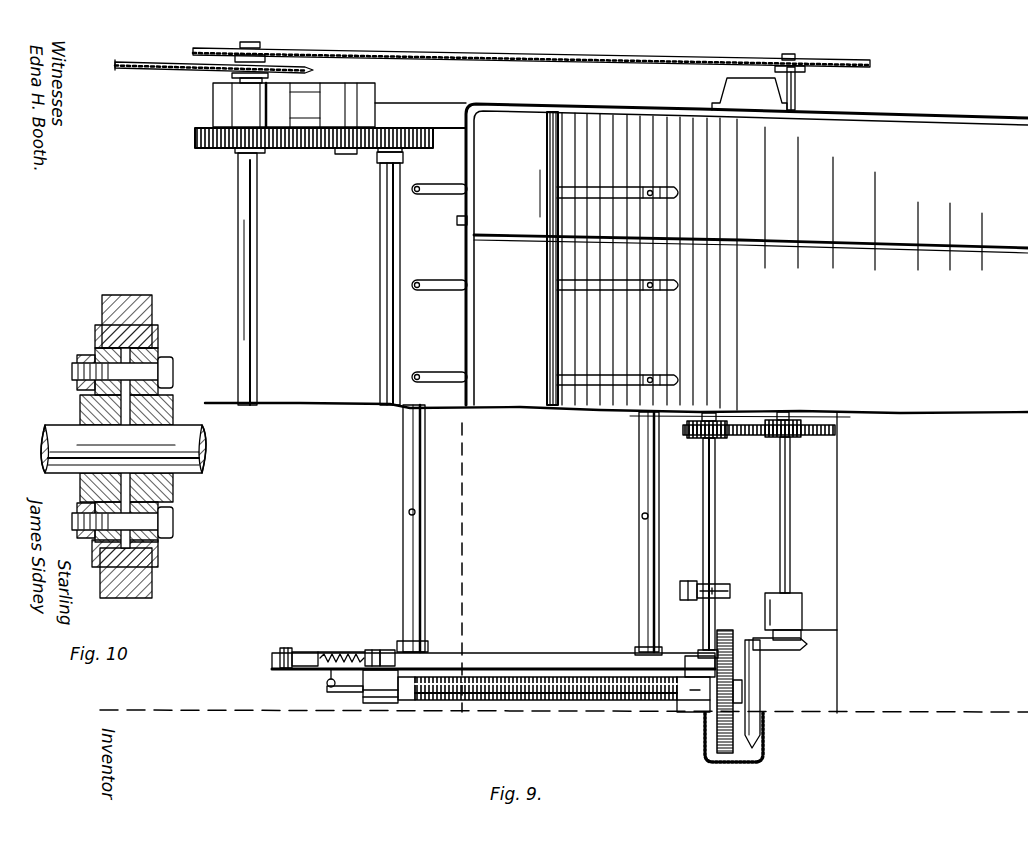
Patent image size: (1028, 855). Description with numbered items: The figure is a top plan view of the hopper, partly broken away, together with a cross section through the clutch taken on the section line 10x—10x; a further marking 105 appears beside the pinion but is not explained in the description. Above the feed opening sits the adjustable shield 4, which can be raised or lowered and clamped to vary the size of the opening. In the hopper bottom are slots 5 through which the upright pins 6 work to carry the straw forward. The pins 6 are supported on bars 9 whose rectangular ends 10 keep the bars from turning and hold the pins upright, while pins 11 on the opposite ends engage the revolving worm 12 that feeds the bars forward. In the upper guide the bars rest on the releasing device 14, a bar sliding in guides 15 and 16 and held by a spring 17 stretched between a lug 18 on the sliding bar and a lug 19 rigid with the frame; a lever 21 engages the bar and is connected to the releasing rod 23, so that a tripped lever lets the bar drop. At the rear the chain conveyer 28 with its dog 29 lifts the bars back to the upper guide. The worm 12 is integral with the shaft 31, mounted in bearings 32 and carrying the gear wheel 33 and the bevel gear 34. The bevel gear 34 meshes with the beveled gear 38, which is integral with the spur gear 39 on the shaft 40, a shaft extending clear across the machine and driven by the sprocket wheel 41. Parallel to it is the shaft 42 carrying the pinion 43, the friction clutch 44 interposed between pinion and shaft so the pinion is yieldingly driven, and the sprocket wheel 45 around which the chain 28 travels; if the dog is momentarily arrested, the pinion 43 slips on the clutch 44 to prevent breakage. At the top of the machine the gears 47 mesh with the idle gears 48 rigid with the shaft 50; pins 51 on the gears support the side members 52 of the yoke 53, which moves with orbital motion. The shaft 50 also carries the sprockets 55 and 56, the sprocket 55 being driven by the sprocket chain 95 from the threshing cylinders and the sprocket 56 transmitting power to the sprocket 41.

In FIG. 9, the adjustable shield 4 is at (518, 400).
In FIG. 9, the slots 5 is at (680, 193).
In FIG. 9, the upright pins 6 is at (417, 193).
In FIG. 9, the bars 9 is at (421, 455).
In FIG. 9, the rectangular ends 10 is at (452, 643).
In FIG. 9, the pins 11 is at (402, 700).
In FIG. 9, the worm 12 is at (612, 703).
In FIG. 9, the releasing device 14 is at (350, 652).
In FIG. 9, the guide 15 is at (284, 648).
In FIG. 9, the guide 16 is at (387, 650).
In FIG. 9, the spring 17 is at (336, 652).
In FIG. 9, the lug 18 is at (312, 652).
In FIG. 9, the lug 19 is at (372, 652).
In FIG. 9, the lever 21 is at (327, 685).
In FIG. 9, the releasing rod 23 is at (348, 692).
In FIG. 9, the chain conveyer 28 is at (727, 591).
In FIG. 9, the dog 29 is at (688, 582).
In FIG. 9, the shaft 31 is at (672, 705).
In FIG. 9, the bearings 32 is at (378, 705).
In FIG. 9, the gear wheel 33 is at (747, 620).
In FIG. 9, the bevel gear 34 is at (794, 691).
In FIG. 9, the beveled gear 38 is at (803, 649).
In FIG. 9, the spur gear 39 is at (822, 436).
In FIG. 9, the shaft 40 is at (830, 99).
In FIG. 9, the sprocket wheel 41 is at (850, 63).
In FIG. 9, the shaft 42 is at (746, 481).
In FIG. 10, the shaft 42 is at (210, 452).
In FIG. 9, the pinion 43 is at (690, 438).
In FIG. 10, the pinion 43 is at (102, 305).
In FIG. 10, the friction clutch 44 is at (78, 404).
In FIG. 9, the sprocket wheel 45 is at (738, 569).
In FIG. 9, the gears 47 is at (348, 150).
In FIG. 9, the idle gears 48 is at (270, 150).
In FIG. 9, the shaft 50 is at (258, 296).
In FIG. 9, the pins 51 is at (400, 155).
In FIG. 9, the side members 52 is at (380, 163).
In FIG. 9, the yoke 53 is at (381, 328).
In FIG. 9, the sprocket 55 is at (318, 70).
In FIG. 9, the sprocket 56 is at (318, 55).
In FIG. 9, the sprocket chain 95 is at (137, 81).
In FIG. 9, the gear mark 105 is at (684, 430).
In FIG. 9, the section line 10x is at (758, 443).